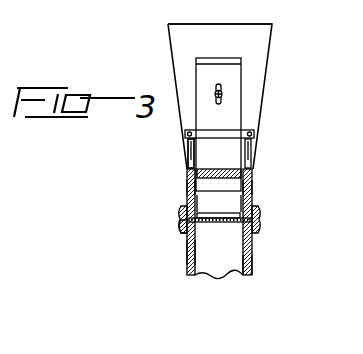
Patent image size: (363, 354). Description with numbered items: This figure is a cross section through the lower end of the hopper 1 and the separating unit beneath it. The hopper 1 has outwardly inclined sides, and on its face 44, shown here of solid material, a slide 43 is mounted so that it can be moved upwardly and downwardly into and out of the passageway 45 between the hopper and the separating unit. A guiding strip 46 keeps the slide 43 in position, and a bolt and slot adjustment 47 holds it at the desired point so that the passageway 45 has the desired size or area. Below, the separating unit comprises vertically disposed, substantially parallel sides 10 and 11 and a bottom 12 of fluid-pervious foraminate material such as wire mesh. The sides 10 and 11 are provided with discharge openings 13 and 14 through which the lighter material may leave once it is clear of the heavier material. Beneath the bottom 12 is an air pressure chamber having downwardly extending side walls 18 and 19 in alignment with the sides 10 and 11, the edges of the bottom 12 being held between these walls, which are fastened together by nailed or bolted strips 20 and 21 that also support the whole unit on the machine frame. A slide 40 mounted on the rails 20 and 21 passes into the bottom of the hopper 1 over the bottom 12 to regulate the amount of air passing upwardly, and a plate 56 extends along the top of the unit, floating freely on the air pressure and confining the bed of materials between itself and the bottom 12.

The hopper 1 is at (170, 47).
The face of the hopper 44 is at (250, 34).
The slide 43 is at (228, 76).
The bolt and slot adjustment 47 is at (223, 94).
The guiding strip 46 is at (230, 132).
The plate 56 is at (248, 145).
The discharge opening 13 is at (190, 173).
The discharge opening 14 is at (252, 171).
The bottom 12 is at (218, 223).
The side 11 is at (252, 192).
The side 10 is at (190, 191).
The side wall 19 is at (253, 266).
The side wall 18 is at (190, 254).
The passageway 45 is at (223, 200).
The slide 40 is at (178, 210).
The strip 20 is at (183, 227).
The strip 21 is at (262, 218).